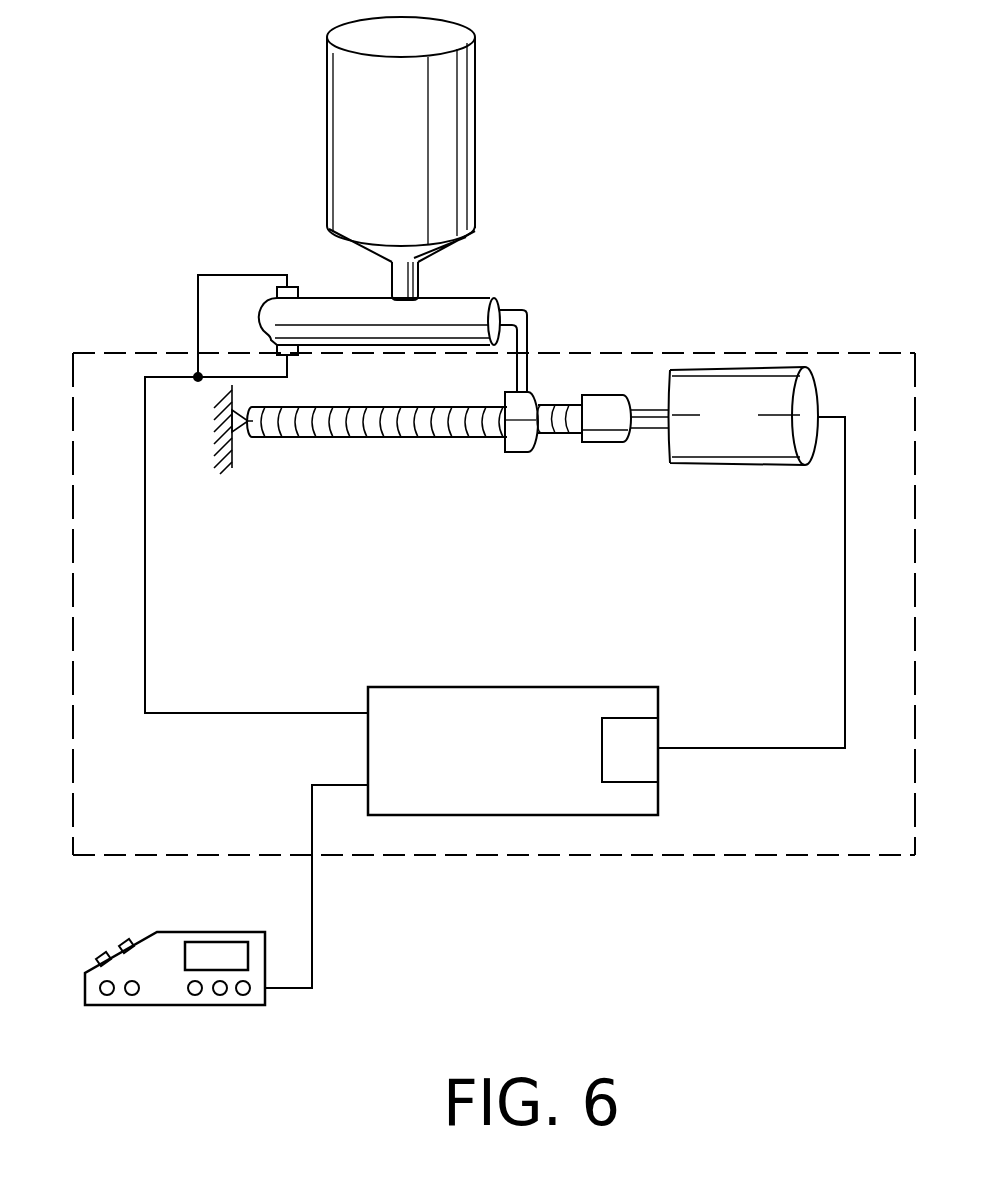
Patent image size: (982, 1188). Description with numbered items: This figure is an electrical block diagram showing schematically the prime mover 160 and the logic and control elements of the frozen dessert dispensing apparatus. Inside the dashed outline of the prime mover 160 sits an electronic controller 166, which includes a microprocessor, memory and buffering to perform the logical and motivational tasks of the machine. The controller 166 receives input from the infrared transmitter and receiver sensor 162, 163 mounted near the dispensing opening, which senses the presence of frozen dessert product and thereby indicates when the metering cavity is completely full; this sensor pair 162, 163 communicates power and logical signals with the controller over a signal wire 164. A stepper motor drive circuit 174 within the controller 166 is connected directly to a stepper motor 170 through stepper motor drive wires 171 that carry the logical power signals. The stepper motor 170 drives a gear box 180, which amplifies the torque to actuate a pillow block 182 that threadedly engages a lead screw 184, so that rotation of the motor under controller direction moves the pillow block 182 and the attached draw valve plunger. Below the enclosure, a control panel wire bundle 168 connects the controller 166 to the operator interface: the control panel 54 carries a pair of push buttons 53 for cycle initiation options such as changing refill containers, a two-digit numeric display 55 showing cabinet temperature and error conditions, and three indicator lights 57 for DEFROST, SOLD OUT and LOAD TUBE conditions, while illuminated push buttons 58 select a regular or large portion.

The push buttons 53 is at (132, 995).
The control panel 54 is at (78, 972).
The numeric display 55 is at (220, 955).
The indicator lights 57 is at (243, 995).
The illuminated push buttons 58 is at (125, 945).
The prime mover 160 is at (740, 347).
The infrared transmitter sensor 162 is at (360, 300).
The infrared receiver sensor 163 is at (330, 240).
The signal wire 164 is at (145, 623).
The electronic controller 166 is at (460, 685).
The control panel wire bundle 168 is at (310, 790).
The stepper motor 170 is at (755, 425).
The stepper motor drive wires 171 is at (845, 575).
The stepper motor drive circuit 174 is at (630, 743).
The gear box 180 is at (515, 453).
The pillow block 182 is at (607, 437).
The lead screw 184 is at (357, 430).